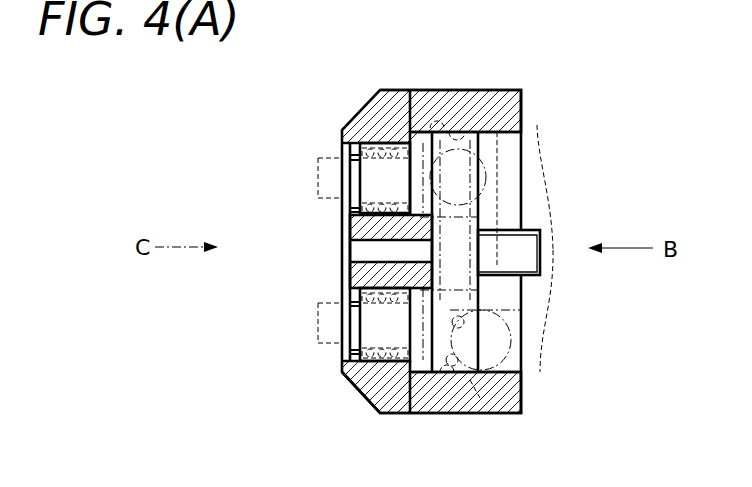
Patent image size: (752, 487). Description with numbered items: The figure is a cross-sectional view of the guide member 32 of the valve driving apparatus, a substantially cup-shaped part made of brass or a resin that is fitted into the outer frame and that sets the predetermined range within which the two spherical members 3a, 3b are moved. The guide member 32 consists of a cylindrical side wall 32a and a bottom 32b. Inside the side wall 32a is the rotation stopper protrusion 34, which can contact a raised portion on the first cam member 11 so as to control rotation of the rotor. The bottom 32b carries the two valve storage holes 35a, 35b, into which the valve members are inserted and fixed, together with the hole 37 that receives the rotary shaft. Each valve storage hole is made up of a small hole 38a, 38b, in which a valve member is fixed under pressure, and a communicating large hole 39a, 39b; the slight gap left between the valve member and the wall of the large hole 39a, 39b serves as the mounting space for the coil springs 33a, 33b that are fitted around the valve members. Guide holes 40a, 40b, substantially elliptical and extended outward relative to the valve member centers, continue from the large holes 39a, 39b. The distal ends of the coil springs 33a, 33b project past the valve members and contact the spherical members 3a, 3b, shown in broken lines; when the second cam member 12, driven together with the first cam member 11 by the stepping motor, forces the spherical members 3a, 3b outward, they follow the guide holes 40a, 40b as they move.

The guide member 32 is at (572, 61).
The cylindrical side wall 32a is at (467, 97).
The bottom 32b is at (352, 303).
The coil spring 33a is at (435, 128).
The coil spring 33b is at (477, 397).
The valve storage hole 35a is at (378, 145).
The valve storage hole 35b is at (372, 358).
The large hole 39a is at (405, 145).
The large hole 39b is at (397, 360).
The small hole 38a is at (345, 158).
The small hole 38b is at (346, 352).
The hole 37 is at (353, 250).
The guide hole 40a is at (462, 132).
The guide hole 40b is at (450, 355).
The rotation stopper protrusion 34 is at (541, 234).
The spherical member 3a is at (480, 165).
The spherical member 3b is at (497, 342).
The first cam member 11 is at (523, 170).
The second cam member 12 is at (523, 207).